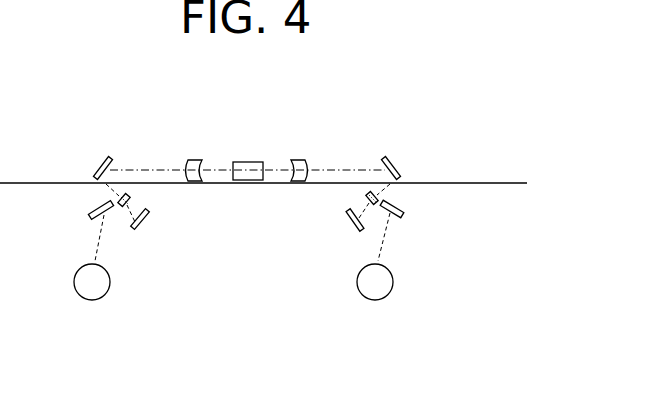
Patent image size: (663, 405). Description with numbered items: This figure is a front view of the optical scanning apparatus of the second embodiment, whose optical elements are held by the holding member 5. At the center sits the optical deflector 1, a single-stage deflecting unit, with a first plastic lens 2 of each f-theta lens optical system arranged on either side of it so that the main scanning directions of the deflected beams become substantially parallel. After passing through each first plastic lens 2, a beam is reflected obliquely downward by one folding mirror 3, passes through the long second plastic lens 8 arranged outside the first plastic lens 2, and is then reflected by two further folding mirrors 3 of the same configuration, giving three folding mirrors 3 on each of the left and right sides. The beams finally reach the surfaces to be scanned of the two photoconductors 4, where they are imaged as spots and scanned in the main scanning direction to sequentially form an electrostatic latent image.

The optical deflector 1 is at (243, 161).
The first plastic lens 2 is at (195, 160).
The folding mirror 3 is at (97, 163).
The photoconductor 4 is at (93, 301).
The holding member 5 is at (478, 182).
The second plastic lens 8 is at (134, 198).